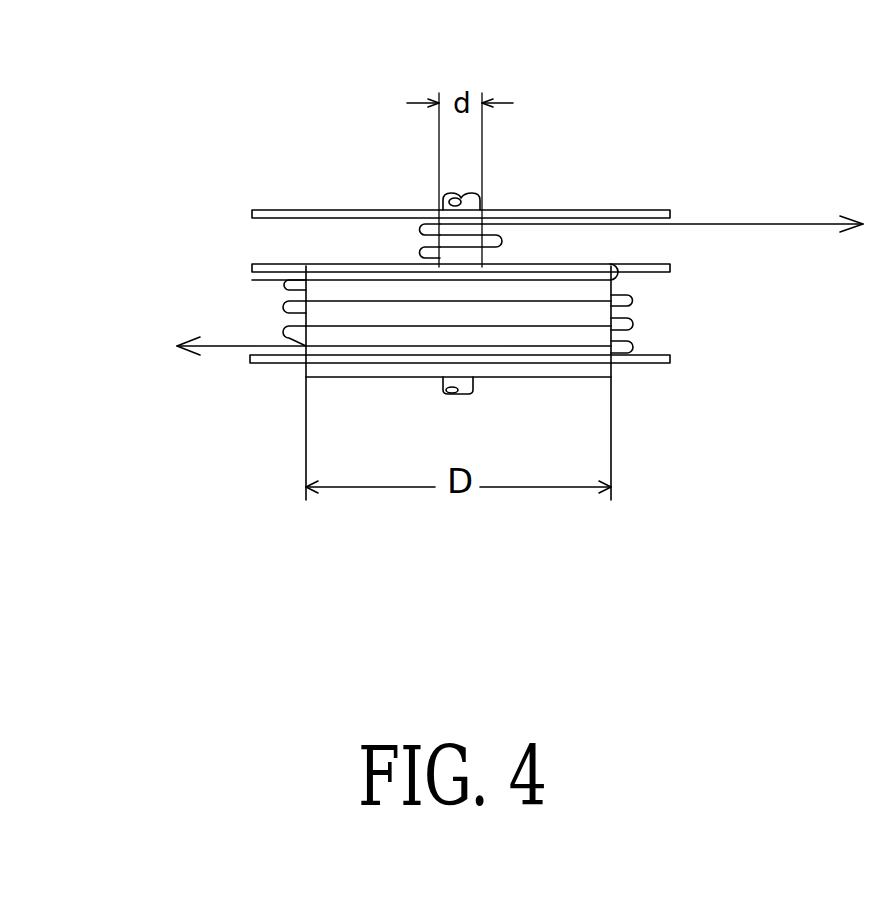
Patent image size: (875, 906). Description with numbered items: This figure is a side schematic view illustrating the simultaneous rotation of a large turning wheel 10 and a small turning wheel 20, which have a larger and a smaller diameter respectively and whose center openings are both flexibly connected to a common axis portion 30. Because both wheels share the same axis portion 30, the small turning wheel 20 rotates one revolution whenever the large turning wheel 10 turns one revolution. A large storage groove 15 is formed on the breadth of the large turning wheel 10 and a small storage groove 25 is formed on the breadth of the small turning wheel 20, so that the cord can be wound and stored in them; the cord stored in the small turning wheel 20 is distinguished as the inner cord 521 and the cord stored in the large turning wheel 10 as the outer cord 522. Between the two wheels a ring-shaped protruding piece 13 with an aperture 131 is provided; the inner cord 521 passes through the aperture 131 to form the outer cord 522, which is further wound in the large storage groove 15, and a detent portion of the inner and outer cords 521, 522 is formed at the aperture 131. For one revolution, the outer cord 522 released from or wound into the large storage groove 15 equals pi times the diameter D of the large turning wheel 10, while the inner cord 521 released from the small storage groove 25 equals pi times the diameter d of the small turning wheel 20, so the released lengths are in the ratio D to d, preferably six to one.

The large turning wheel 10 is at (600, 342).
The ring-shaped protruding piece 13 is at (280, 268).
The aperture 131 is at (630, 270).
The large storage groove 15 is at (650, 308).
The small turning wheel 20 is at (463, 225).
The small storage groove 25 is at (410, 239).
The axis portion 30 is at (450, 197).
The inner cord 521 is at (500, 237).
The outer cord 522 is at (283, 337).